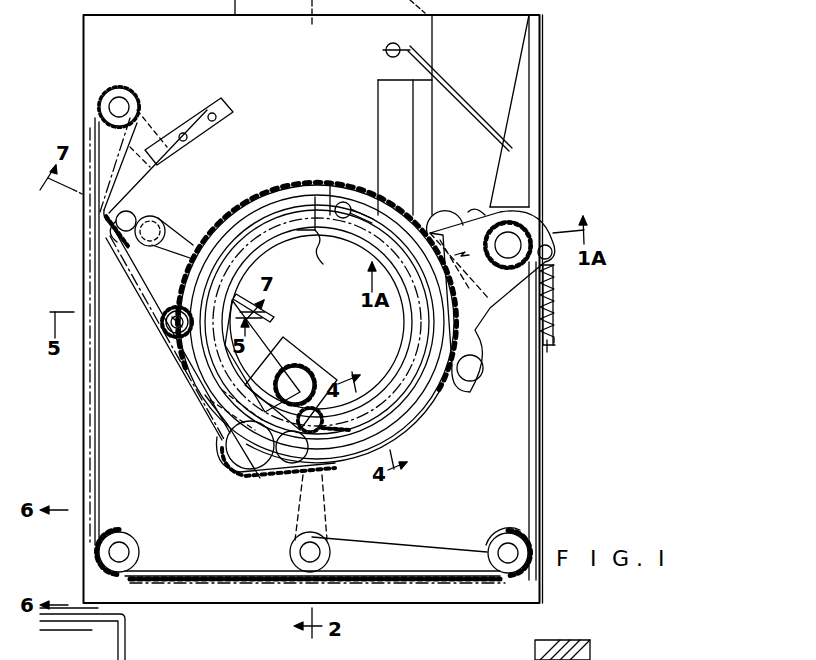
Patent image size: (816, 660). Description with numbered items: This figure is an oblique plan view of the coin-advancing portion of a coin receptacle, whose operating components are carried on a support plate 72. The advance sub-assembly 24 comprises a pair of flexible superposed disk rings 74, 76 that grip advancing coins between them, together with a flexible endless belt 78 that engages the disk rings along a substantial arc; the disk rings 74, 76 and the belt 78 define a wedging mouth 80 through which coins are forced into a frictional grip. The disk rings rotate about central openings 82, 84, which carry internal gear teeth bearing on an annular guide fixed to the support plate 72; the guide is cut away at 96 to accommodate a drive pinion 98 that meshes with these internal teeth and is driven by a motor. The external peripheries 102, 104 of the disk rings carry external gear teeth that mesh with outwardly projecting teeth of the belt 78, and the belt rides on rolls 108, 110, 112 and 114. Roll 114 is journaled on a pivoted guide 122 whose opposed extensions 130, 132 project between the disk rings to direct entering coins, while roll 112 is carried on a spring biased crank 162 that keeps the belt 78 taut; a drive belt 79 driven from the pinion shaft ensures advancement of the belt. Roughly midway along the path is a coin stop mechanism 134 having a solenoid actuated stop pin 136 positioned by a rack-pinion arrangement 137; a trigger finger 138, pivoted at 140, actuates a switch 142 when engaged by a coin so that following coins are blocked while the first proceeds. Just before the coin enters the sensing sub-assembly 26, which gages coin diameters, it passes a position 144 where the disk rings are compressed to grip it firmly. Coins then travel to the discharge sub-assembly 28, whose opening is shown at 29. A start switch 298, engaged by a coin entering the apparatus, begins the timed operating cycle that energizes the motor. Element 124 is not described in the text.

The disk ring 74 is at (299, 180).
The external periphery 102 is at (304, 180).
The external periphery 104 is at (333, 180).
The disk ring 76 is at (345, 188).
The discharge sub-assembly 28 is at (367, 255).
The central opening 84 is at (343, 220).
The central opening 82 is at (304, 222).
The opening 29 is at (322, 250).
The support plate 72 is at (208, 499).
The roll 108 is at (133, 100).
The roll 110 is at (120, 532).
The roll 112 is at (507, 530).
The drive belt 79 is at (170, 120).
The sensing sub-assembly 26 is at (170, 232).
The position 144 is at (165, 340).
The start switch 298 is at (457, 108).
The pivoted guide 122 is at (518, 279).
The wedging mouth 80 is at (460, 300).
The roller 124 is at (478, 372).
The advance sub-assembly 24 is at (448, 388).
The extension 130 is at (460, 215).
The extension 132 is at (242, 107).
The roll 114 is at (540, 228).
The pivot 140 is at (262, 336).
The switch 142 is at (262, 312).
The rack-pinion arrangement 137 is at (296, 368).
The cut away 96 is at (316, 417).
The coin stop mechanism 134 is at (250, 445).
The drive pinion 98 is at (338, 470).
The trigger finger 138 is at (220, 395).
The stop pin 136 is at (222, 422).
The spring biased crank 162 is at (376, 545).
The endless belt 78 is at (465, 659).